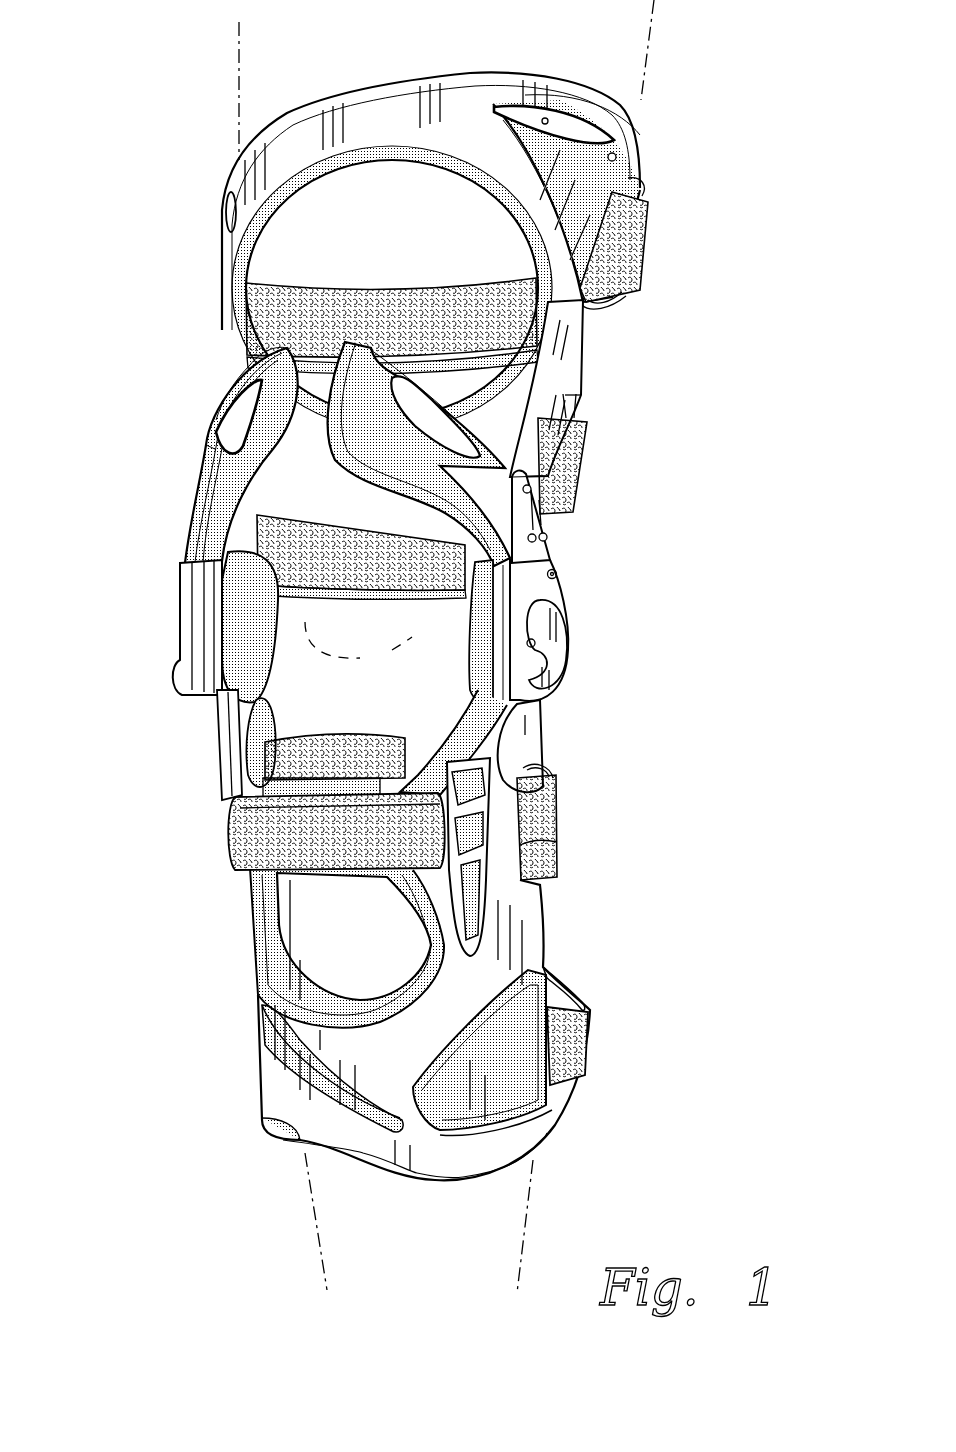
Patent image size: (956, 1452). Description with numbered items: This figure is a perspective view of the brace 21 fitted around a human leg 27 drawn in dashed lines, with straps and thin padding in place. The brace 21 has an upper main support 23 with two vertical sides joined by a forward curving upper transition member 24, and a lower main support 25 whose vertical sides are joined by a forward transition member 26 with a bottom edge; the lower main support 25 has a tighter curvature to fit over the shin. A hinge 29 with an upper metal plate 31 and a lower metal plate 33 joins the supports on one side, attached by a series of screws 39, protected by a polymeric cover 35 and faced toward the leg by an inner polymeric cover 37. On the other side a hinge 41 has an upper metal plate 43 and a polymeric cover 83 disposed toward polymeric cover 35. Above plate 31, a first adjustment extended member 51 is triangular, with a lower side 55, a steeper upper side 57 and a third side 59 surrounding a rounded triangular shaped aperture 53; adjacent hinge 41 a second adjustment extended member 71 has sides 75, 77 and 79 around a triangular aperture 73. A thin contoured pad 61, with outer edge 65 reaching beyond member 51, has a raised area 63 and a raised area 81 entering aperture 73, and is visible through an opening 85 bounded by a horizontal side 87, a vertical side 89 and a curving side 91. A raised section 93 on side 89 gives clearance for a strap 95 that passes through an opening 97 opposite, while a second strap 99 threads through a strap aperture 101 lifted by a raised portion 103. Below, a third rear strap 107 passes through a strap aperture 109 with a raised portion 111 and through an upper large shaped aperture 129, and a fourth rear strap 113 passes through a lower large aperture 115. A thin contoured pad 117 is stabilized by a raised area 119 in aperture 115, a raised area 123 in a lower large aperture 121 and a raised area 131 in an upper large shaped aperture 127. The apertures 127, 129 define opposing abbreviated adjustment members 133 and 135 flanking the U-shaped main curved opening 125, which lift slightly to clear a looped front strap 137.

The brace 21 is at (637, 730).
The upper main support 23 is at (590, 366).
The upper transition member 24 is at (397, 173).
The lower main support 25 is at (586, 940).
The forward transition member 26 is at (405, 1140).
The human leg 27 is at (650, 50).
The hinge 29 is at (580, 653).
The upper metal plate 31 is at (553, 548).
The lower metal plate 33 is at (542, 712).
The polymeric cover 35 is at (567, 622).
The inner polymeric cover 37 is at (467, 655).
The screws 39 is at (532, 754).
The hinge 41 is at (172, 598).
The upper metal plate 43 is at (193, 530).
The first adjustment extended member 51 is at (403, 522).
The rounded triangular shaped aperture 53 is at (418, 410).
The lower side 55 is at (437, 467).
The upper side 57 is at (425, 330).
The third side 59 is at (368, 325).
The thin contoured pad 61 is at (462, 178).
The raised area 63 is at (442, 446).
The outer edge 65 is at (340, 413).
The second adjustment extended member 71 is at (270, 473).
The triangular aperture 73 is at (210, 462).
The lower side 75 is at (206, 432).
The upper side 77 is at (240, 377).
The third side 79 is at (267, 357).
The raised area 81 is at (238, 397).
The polymeric cover 83 is at (270, 663).
The opening 85 is at (595, 122).
The horizontal side 87 is at (550, 120).
The vertical side 89 is at (613, 158).
The curving side 91 is at (590, 140).
The raised section 93 is at (638, 183).
The strap 95 is at (638, 248).
The opening 97 is at (226, 212).
The second strap 99 is at (590, 448).
The strap aperture 101 is at (575, 412).
The raised portion 103 is at (580, 388).
The third rear strap 107 is at (558, 807).
The strap aperture 109 is at (557, 863).
The raised portion 111 is at (553, 773).
The fourth rear strap 113 is at (588, 1040).
The lower large aperture 115 is at (543, 1100).
The thin contoured pad 117 is at (343, 993).
The raised area 119 is at (533, 1080).
The lower large aperture 121 is at (270, 1092).
The raised area 123 is at (262, 1060).
The main curved opening 125 is at (280, 940).
The upper large shaped aperture 127 is at (480, 882).
The upper large shaped aperture 129 is at (223, 750).
The raised area 131 is at (551, 857).
The abbreviated adjustment member 133 is at (424, 800).
The abbreviated adjustment member 135 is at (228, 833).
The front strap 137 is at (237, 787).